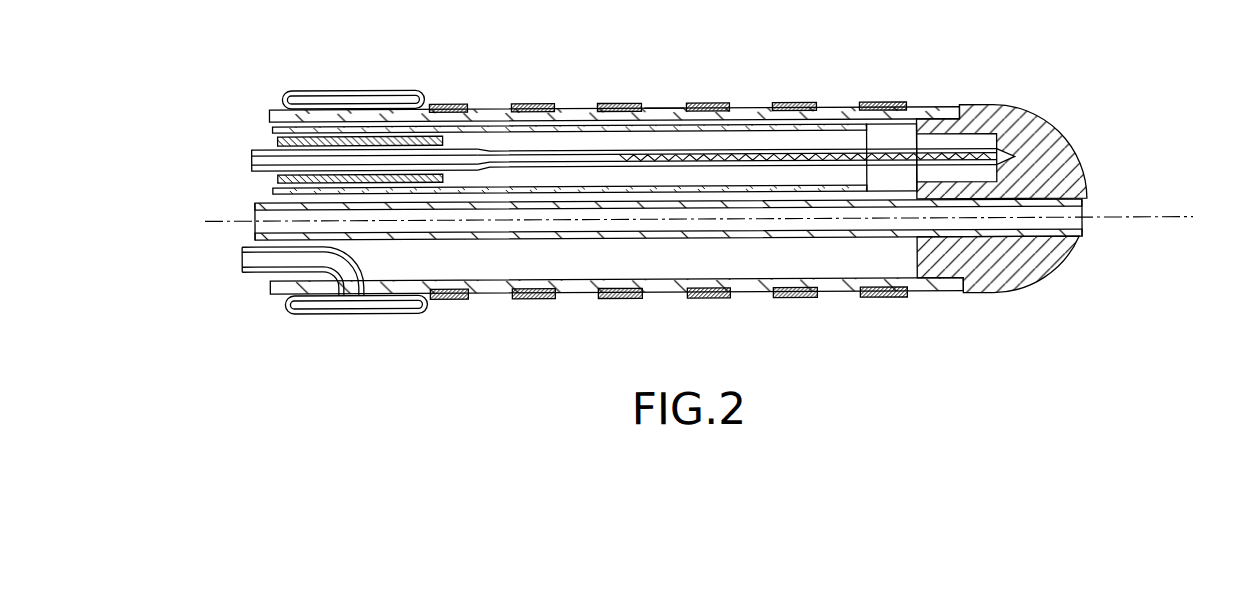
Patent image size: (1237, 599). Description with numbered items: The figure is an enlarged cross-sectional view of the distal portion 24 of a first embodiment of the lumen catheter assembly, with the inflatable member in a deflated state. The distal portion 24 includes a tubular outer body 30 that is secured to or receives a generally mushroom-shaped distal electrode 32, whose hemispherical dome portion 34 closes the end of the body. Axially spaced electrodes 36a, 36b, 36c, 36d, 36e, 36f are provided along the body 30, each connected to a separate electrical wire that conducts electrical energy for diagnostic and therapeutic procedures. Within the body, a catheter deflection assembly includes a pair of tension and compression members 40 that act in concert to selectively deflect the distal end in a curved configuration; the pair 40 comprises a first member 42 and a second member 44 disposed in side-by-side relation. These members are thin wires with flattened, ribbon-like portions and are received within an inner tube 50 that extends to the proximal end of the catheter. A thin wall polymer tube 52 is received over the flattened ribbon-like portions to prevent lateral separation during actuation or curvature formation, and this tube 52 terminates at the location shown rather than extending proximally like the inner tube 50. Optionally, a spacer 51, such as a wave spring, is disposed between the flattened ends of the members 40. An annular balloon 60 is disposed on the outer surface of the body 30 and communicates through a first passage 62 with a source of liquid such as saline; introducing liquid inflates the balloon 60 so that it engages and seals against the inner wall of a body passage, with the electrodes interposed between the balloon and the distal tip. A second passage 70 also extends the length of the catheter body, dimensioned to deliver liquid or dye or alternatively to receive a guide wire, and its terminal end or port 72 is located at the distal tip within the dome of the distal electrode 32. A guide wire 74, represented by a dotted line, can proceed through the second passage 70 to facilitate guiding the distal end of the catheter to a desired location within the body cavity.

The distal portion 24 is at (1059, 174).
The outer body 30 is at (585, 90).
The distal electrode 32 is at (1010, 128).
The hemispherical dome portion 34 is at (1076, 250).
The electrode 36a is at (445, 102).
The electrode 36b is at (528, 102).
The electrode 36c is at (618, 102).
The electrode 36d is at (708, 102).
The electrode 36e is at (808, 102).
The electrode 36f is at (894, 102).
The tension and compression members 40 is at (504, 133).
The first member 42 is at (241, 139).
The second member 44 is at (237, 170).
The inner tube 50 is at (283, 134).
The spacer 51 is at (750, 150).
The thin wall polymer tube 52 is at (661, 103).
The balloon 60 is at (367, 77).
The first passage 62 is at (242, 271).
The second passage 70 is at (255, 237).
The port 72 is at (1085, 208).
The guide wire 74 is at (1158, 218).